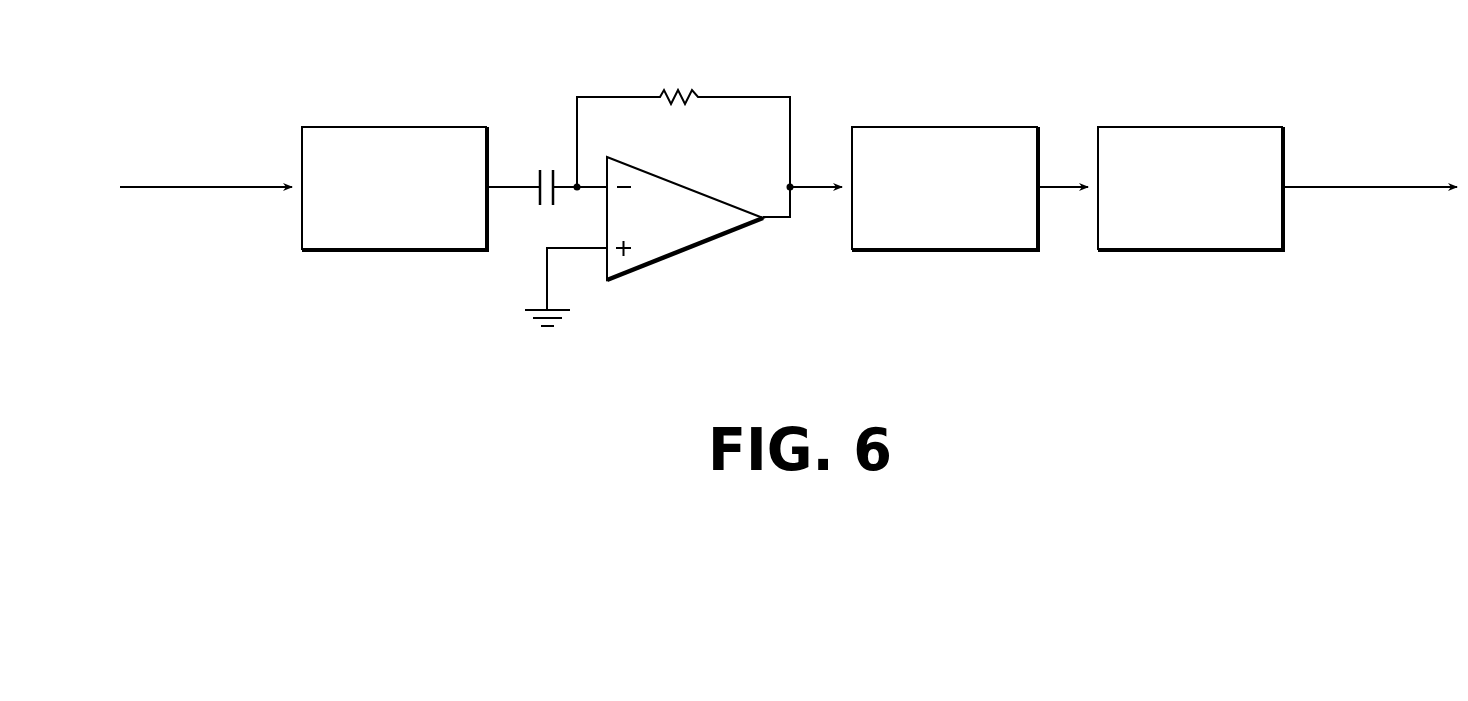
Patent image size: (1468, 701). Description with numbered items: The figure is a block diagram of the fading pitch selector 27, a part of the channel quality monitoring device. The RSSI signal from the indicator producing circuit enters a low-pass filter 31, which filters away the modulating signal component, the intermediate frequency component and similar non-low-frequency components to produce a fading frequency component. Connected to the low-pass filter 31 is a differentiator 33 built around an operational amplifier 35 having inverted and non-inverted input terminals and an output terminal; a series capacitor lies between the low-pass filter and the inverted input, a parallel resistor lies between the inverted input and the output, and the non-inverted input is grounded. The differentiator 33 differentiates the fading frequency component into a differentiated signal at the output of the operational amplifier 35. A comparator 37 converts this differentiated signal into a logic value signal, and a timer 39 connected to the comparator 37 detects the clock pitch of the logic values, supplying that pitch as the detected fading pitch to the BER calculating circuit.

The fading pitch selector 27 is at (1086, 376).
The low-pass filter 31 is at (426, 127).
The differentiator 33 is at (640, 203).
The operational amplifier 35 is at (702, 192).
The comparator 37 is at (977, 127).
The timer 39 is at (1223, 127).